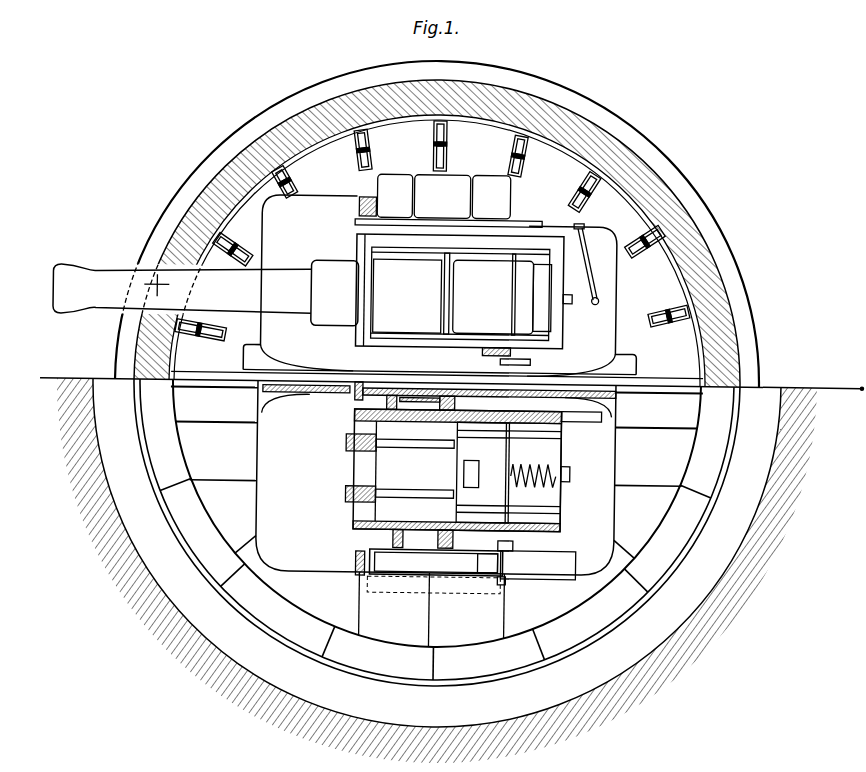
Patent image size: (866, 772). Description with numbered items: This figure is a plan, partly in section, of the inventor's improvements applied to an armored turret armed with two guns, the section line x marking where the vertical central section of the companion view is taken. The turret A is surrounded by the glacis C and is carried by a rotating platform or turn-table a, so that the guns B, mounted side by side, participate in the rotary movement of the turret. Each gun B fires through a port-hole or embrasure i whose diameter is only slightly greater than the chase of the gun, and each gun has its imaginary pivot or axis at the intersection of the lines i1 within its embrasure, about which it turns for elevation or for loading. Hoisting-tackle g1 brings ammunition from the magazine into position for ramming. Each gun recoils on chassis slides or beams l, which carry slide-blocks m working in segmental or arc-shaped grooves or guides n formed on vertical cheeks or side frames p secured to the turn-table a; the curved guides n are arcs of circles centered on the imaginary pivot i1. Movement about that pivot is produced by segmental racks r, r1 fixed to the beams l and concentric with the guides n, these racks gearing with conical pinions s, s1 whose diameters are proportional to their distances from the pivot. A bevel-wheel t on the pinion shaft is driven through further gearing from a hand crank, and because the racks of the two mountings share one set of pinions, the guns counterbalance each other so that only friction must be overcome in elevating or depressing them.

The section line x is at (440, 382).
The glacis C is at (438, 383).
The turret A is at (437, 383).
The rotating platform or turn-table a is at (444, 383).
The port-hole or embrasure i is at (437, 383).
The imaginary pivot or axis lines i1 is at (160, 281).
The gun B is at (206, 291).
The vertical cheeks or side frames p is at (430, 212).
The segmental or arc-shaped grooves or guides n is at (430, 386).
The hoisting-tackle g1 is at (592, 264).
The segmental rack r1 is at (438, 468).
The chassis slides or beams l is at (476, 490).
The slide-blocks m is at (412, 530).
The conical pinion s is at (493, 458).
The conical pinion s1 is at (348, 474).
The segmental rack r is at (516, 546).
The bevel-wheel t is at (530, 362).